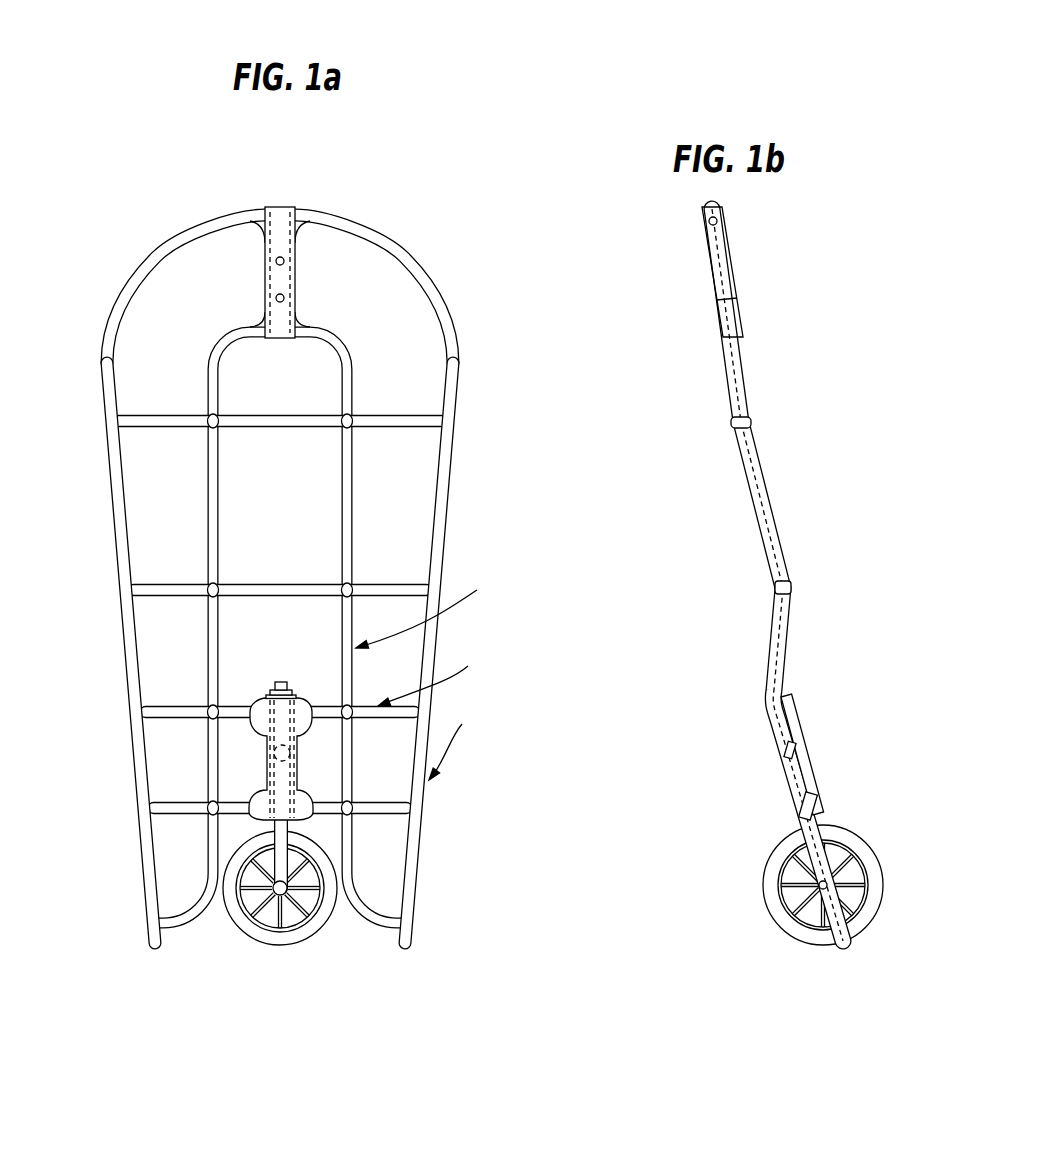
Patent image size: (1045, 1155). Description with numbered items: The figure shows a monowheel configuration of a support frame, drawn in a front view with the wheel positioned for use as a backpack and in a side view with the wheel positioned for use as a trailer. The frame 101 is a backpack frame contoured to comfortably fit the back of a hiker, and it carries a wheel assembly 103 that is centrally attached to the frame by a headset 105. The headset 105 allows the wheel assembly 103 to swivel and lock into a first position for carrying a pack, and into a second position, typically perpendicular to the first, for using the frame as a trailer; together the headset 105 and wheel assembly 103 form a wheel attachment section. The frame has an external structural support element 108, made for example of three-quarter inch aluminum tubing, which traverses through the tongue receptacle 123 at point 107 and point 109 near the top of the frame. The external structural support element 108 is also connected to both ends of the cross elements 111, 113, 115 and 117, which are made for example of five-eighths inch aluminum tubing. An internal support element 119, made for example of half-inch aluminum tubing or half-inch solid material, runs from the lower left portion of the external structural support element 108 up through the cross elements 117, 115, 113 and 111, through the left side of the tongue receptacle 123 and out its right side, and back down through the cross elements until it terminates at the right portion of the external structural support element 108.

In FIG. 1A, the frame 101 is at (417, 156).
In FIG. 1B, the frame 101 is at (787, 597).
In FIG. 1A, the wheel assembly 103 is at (316, 936).
In FIG. 1B, the wheel assembly 103 is at (862, 937).
In FIG. 1A, the headset 105 is at (299, 676).
In FIG. 1B, the headset 105 is at (795, 723).
In FIG. 1A, the point 107 is at (258, 211).
In FIG. 1A, the external structural support element 108 is at (101, 337).
In FIG. 1A, the point 109 is at (308, 212).
In FIG. 1A, the cross element 111 is at (400, 416).
In FIG. 1A, the cross element 113 is at (368, 584).
In FIG. 1A, the cross element 115 is at (382, 718).
In FIG. 1A, the cross element 117 is at (381, 814).
In FIG. 1A, the internal support element 119 is at (219, 459).
In FIG. 1A, the tongue receptacle 123 is at (294, 206).